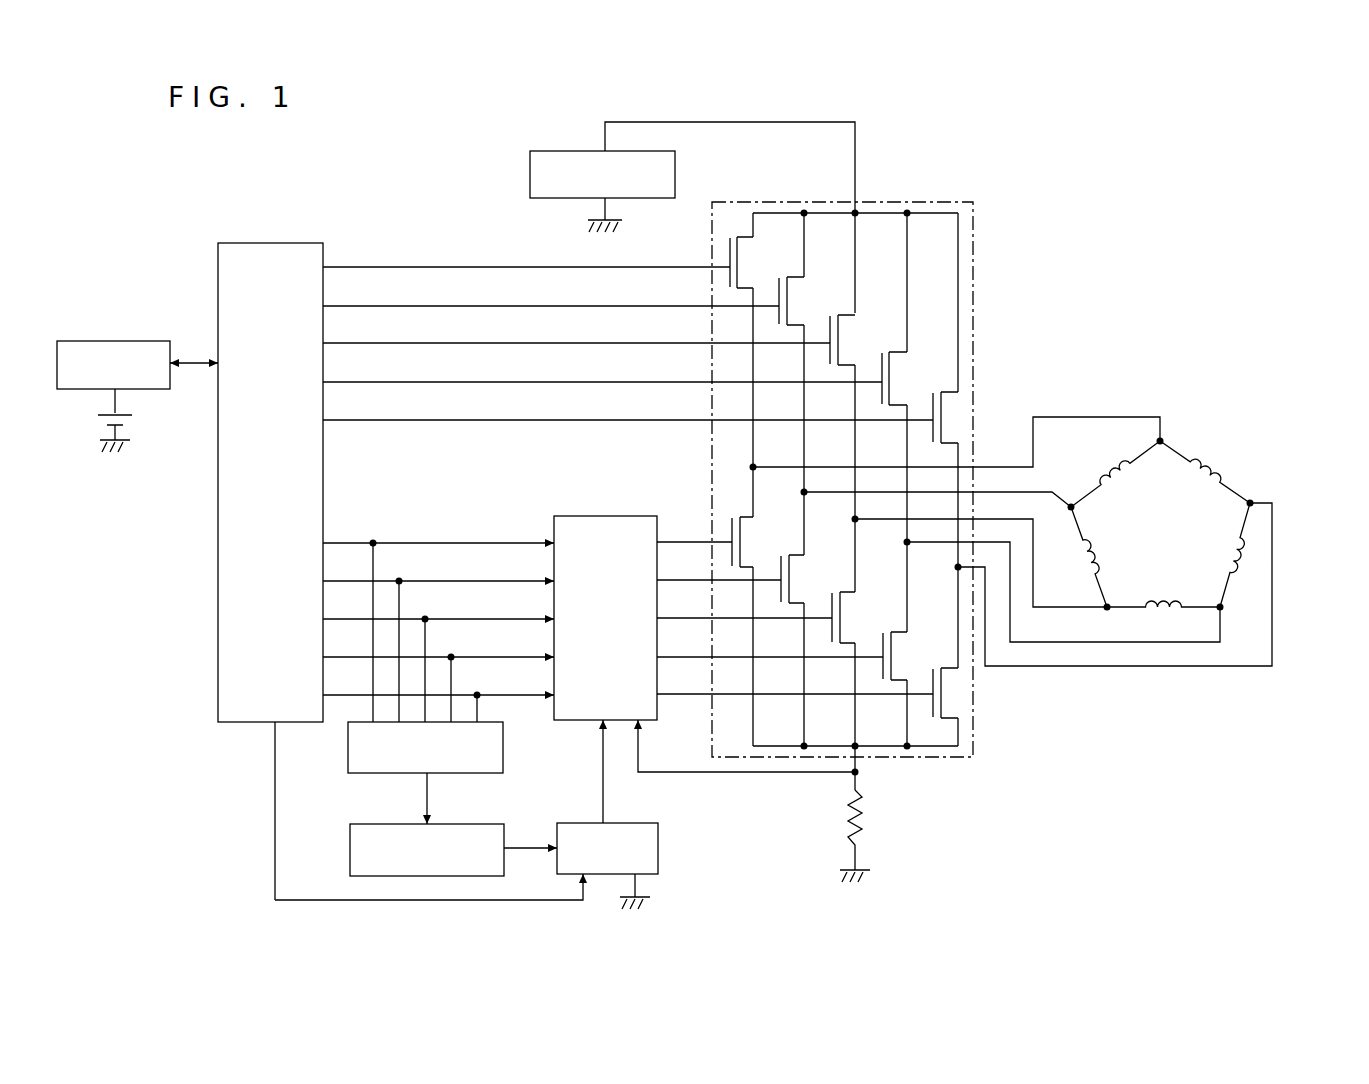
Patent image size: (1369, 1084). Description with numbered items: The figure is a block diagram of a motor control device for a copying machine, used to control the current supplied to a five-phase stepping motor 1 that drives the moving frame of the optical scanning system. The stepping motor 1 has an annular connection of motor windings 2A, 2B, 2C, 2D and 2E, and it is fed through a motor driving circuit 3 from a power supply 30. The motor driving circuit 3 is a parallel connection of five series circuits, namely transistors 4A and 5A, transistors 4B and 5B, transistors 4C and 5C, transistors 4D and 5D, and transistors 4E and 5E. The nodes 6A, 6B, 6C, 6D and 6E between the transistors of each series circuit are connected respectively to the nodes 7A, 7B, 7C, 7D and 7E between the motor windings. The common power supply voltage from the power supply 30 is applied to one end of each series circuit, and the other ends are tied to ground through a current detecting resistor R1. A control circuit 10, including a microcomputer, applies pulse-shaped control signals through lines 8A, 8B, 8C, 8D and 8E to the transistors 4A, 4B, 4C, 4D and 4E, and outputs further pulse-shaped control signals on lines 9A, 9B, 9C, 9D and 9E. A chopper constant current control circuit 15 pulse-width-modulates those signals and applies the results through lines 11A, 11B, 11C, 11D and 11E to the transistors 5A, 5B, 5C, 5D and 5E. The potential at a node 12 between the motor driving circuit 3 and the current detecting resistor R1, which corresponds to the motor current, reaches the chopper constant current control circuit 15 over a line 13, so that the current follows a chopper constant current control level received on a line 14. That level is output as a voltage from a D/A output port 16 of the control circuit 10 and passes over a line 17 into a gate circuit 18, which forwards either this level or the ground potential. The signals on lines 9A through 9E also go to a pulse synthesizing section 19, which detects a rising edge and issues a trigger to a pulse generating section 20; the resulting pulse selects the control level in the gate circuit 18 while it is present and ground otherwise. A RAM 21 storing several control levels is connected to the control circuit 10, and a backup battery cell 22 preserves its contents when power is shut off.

The stepping motor 1 is at (1159, 512).
The motor winding 2A is at (1192, 470).
The motor winding 2B is at (1105, 472).
The motor winding 2C is at (1100, 560).
The motor winding 2D is at (1163, 612).
The motor winding 2E is at (1232, 550).
The motor driving circuit 3 is at (972, 230).
The transistor 4A is at (745, 266).
The transistor 4B is at (795, 304).
The transistor 4C is at (847, 342).
The transistor 4D is at (899, 381).
The transistor 4E is at (955, 410).
The transistor 5A is at (748, 541).
The transistor 5B is at (797, 579).
The transistor 5C is at (848, 618).
The transistor 5D is at (900, 656).
The transistor 5E is at (957, 700).
The node 6A is at (755, 466).
The node 6B is at (808, 490).
The node 6C is at (858, 517).
The node 6D is at (905, 543).
The node 6E is at (957, 570).
The node 7A is at (1162, 440).
The node 7B is at (1073, 508).
The node 7C is at (1107, 610).
The node 7D is at (1222, 610).
The node 7E is at (1251, 500).
The line 8A is at (386, 266).
The line 8B is at (390, 305).
The line 8C is at (395, 343).
The line 8D is at (395, 382).
The line 8E is at (410, 420).
The line 9A is at (440, 542).
The line 9B is at (460, 581).
The line 9C is at (476, 619).
The line 9D is at (486, 657).
The line 9E is at (492, 695).
The control circuit 10 is at (277, 246).
The line 11A is at (698, 540).
The line 11B is at (722, 580).
The line 11C is at (722, 618).
The line 11D is at (722, 656).
The line 11E is at (722, 694).
The node 12 is at (860, 774).
The line 13 is at (735, 774).
The line 14 is at (606, 797).
The chopper constant current control circuit 15 is at (594, 516).
The D/A output port 16 is at (273, 741).
The line 17 is at (313, 898).
The gate circuit 18 is at (658, 857).
The pulse synthesizing section 19 is at (504, 748).
The pulse generating section 20 is at (490, 824).
The RAM 21 is at (123, 341).
The backup battery cell 22 is at (132, 424).
The power supply 30 is at (678, 170).
The current detecting resistor R1 is at (866, 820).